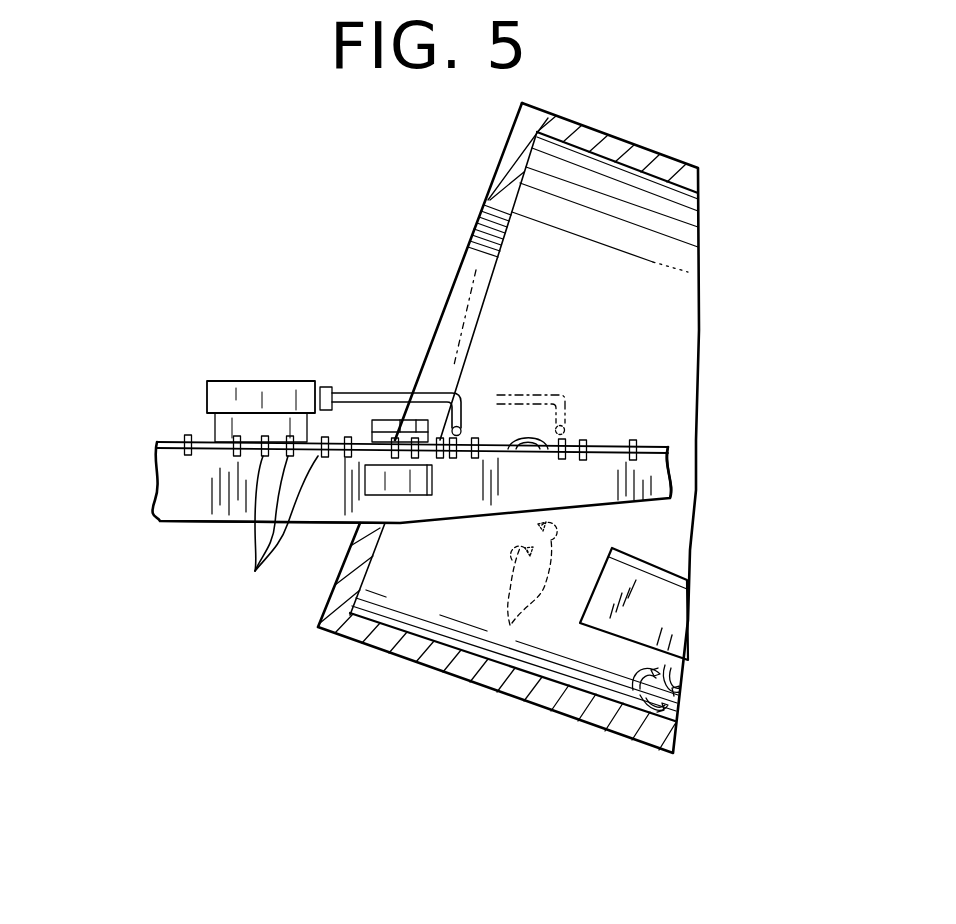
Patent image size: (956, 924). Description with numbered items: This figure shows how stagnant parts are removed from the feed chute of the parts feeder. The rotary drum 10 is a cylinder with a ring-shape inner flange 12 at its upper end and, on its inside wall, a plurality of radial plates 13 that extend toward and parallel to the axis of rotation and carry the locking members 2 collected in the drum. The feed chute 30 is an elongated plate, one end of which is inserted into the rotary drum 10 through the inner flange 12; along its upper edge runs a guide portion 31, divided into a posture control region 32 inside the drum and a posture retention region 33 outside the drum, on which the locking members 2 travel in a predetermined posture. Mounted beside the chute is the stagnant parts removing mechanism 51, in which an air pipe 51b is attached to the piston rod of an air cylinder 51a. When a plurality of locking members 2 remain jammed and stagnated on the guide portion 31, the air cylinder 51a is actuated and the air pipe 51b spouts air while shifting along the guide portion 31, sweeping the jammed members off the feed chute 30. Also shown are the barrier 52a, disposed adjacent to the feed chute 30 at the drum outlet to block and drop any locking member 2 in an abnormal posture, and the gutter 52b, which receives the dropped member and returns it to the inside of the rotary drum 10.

The rotary drum 10 is at (659, 145).
The ring-shape inner flange 12 is at (503, 162).
The radial plate 13 is at (658, 607).
The locking member 2 is at (620, 712).
The feed chute 30 is at (146, 471).
The guide portion 31 is at (157, 442).
The posture control region 32 is at (646, 503).
The posture retention region 33 is at (187, 493).
The stagnant parts removing mechanism 51 is at (265, 368).
The air cylinder 51a is at (228, 382).
The air pipe 51b is at (450, 378).
The barrier 52a is at (386, 418).
The gutter 52b is at (410, 496).